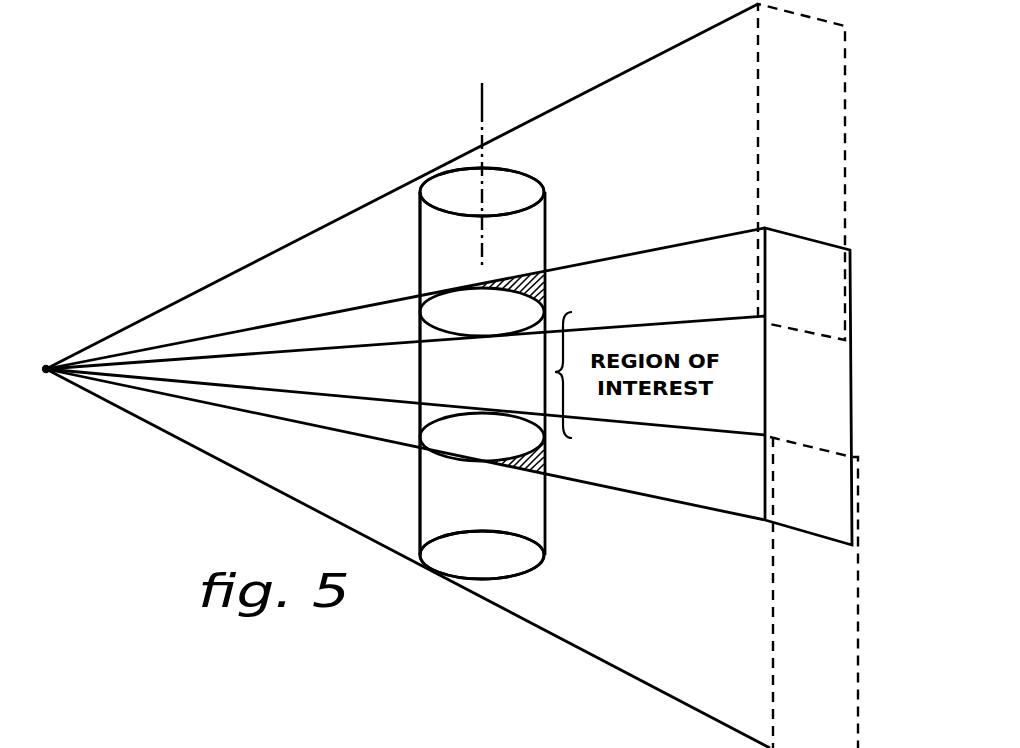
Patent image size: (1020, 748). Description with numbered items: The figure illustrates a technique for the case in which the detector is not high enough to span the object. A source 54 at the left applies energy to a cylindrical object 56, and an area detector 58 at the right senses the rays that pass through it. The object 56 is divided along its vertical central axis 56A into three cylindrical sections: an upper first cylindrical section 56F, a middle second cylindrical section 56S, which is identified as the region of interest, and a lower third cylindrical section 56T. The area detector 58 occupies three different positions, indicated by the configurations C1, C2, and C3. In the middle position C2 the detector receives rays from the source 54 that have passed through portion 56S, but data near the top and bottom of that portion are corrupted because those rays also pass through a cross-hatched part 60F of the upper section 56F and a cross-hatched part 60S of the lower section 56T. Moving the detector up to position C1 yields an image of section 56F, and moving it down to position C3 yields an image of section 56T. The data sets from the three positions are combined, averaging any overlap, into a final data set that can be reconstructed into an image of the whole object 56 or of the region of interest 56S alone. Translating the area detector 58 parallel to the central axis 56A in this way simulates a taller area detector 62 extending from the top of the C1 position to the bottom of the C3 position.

The source 54 is at (46, 372).
The object 56 is at (546, 211).
The central axis 56A is at (482, 105).
The first cylindrical section 56F is at (420, 250).
The second cylindrical section 56S is at (418, 370).
The third cylindrical section 56T is at (546, 506).
The area detector 58 is at (765, 403).
The part of upper portion 60F is at (547, 285).
The part of lower portion 60S is at (548, 452).
The simulated area detector 62 is at (773, 632).
The first detector configuration C1 is at (758, 205).
The second detector configuration C2 is at (765, 340).
The third detector configuration C3 is at (773, 730).